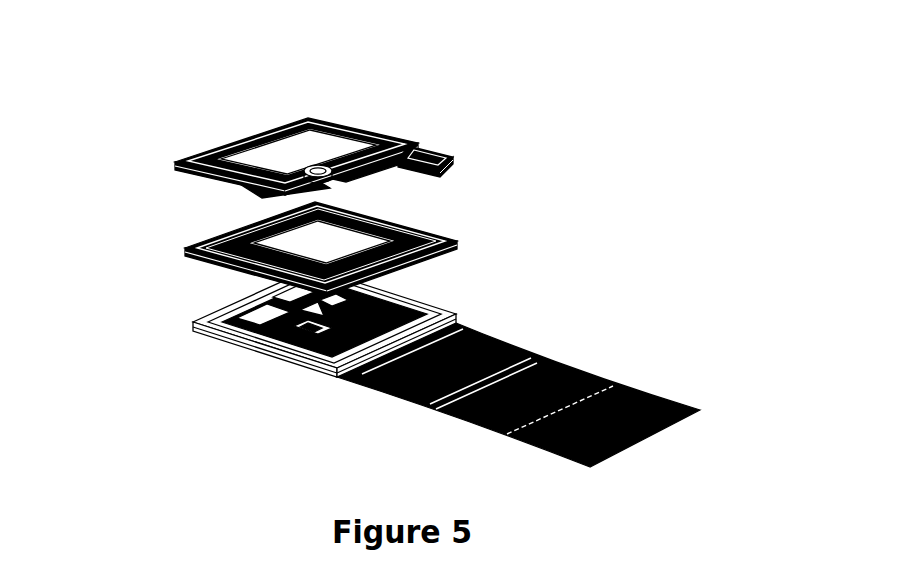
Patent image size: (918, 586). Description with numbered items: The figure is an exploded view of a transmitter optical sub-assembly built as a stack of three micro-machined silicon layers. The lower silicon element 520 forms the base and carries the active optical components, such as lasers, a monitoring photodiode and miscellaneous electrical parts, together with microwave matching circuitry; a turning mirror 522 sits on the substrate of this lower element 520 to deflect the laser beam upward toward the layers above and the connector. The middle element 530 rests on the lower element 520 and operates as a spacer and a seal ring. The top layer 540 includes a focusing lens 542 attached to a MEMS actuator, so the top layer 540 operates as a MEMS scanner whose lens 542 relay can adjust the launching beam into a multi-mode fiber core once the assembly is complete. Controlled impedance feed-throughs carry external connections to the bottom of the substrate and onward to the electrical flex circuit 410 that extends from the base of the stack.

The electrical flex circuit 410 is at (618, 378).
The lower silicon element 520 is at (327, 291).
The turning mirror 522 is at (317, 313).
The middle element 530 is at (443, 235).
The top layer 540 is at (358, 105).
The focusing lens 542 is at (318, 163).